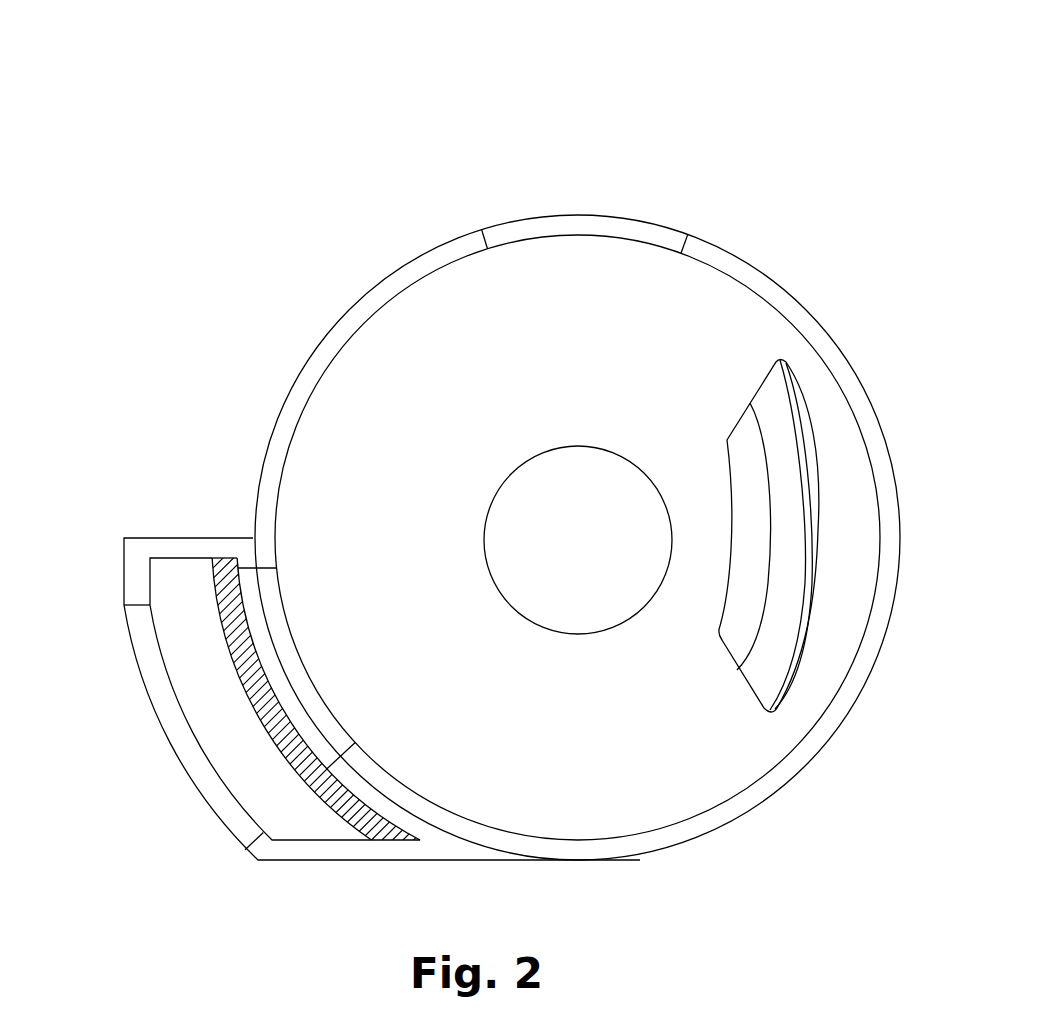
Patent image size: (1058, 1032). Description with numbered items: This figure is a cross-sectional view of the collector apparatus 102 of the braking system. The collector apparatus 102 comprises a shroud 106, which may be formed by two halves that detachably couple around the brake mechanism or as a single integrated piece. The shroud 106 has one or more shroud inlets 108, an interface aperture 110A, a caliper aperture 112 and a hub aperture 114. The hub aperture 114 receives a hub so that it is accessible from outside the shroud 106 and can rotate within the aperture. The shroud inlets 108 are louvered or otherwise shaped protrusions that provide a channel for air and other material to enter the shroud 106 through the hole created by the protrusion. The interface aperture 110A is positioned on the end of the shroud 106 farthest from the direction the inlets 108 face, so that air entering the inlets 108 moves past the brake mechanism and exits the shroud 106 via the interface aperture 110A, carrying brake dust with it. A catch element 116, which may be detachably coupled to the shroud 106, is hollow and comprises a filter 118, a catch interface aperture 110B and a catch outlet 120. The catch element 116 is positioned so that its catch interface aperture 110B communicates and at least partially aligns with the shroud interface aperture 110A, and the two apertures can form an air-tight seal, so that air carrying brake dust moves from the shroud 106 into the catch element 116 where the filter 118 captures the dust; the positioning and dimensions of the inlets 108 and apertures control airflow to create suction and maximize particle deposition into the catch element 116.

The collector apparatus 102 is at (768, 74).
The shroud 106 is at (857, 389).
The shroud inlet 108 is at (777, 613).
The interface aperture 110A is at (273, 595).
The catch interface aperture 110B is at (297, 715).
The caliper aperture 112 is at (689, 212).
The hub aperture 114 is at (568, 463).
The catch element 116 is at (124, 570).
The filter 118 is at (222, 590).
The catch outlet 120 is at (232, 852).